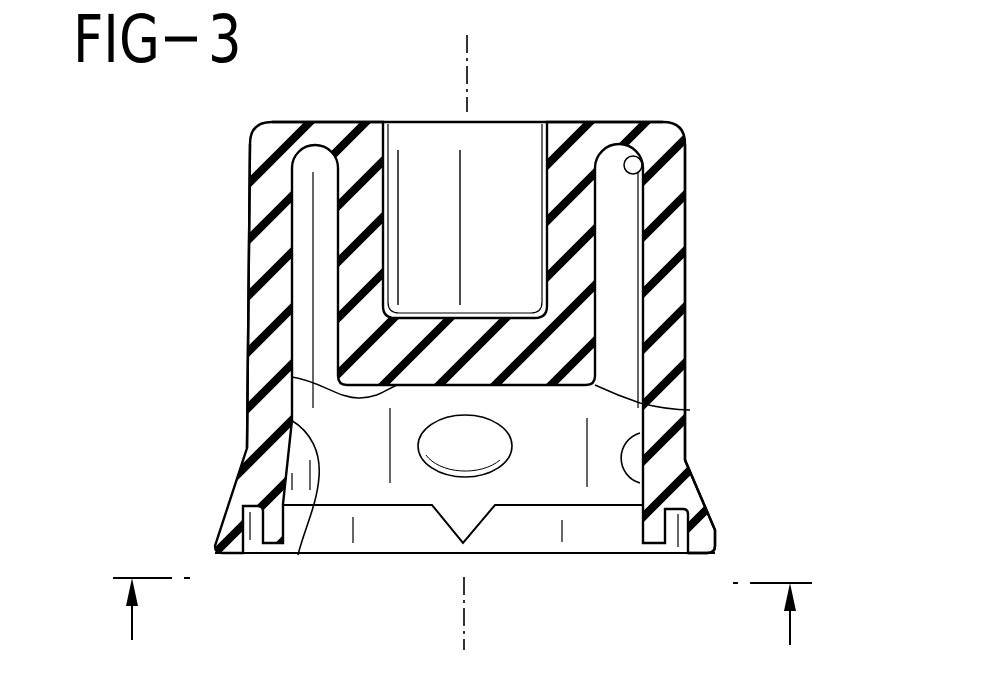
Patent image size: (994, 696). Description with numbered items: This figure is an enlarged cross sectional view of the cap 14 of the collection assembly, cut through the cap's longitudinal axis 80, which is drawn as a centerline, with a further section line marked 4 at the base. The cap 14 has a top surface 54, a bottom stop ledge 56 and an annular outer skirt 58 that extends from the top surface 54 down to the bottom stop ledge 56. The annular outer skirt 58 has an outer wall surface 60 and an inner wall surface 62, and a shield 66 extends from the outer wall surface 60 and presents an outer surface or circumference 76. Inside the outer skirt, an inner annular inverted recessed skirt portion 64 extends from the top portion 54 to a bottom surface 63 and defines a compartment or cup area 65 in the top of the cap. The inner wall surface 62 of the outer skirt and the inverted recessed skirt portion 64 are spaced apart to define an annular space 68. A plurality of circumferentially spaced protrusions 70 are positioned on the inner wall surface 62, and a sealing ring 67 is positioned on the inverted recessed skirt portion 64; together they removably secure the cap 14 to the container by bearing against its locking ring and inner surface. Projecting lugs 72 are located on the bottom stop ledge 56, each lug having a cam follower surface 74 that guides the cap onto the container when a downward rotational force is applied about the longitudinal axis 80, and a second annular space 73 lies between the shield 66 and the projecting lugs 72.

The cap 14 is at (706, 195).
The top surface 54 is at (645, 123).
The bottom stop ledge 56 is at (667, 512).
The annular outer skirt 58 is at (683, 313).
The outer wall surface 60 is at (250, 258).
The inner wall surface 62 is at (642, 157).
The bottom surface 63 is at (292, 377).
The inner annular inverted recessed skirt portion 64 is at (582, 222).
The cup area 65 is at (548, 125).
The shield 66 is at (700, 530).
The sealing ring 67 is at (690, 410).
The annular space 68 is at (313, 183).
The protrusions 70 is at (298, 555).
The projecting lugs 72 is at (460, 522).
The second annular space 73 is at (247, 515).
The cam follower surface 74 is at (483, 523).
The outer surface 76 is at (715, 555).
The longitudinal axis 80 is at (463, 52).
The section line 4- 4 is at (463, 606).